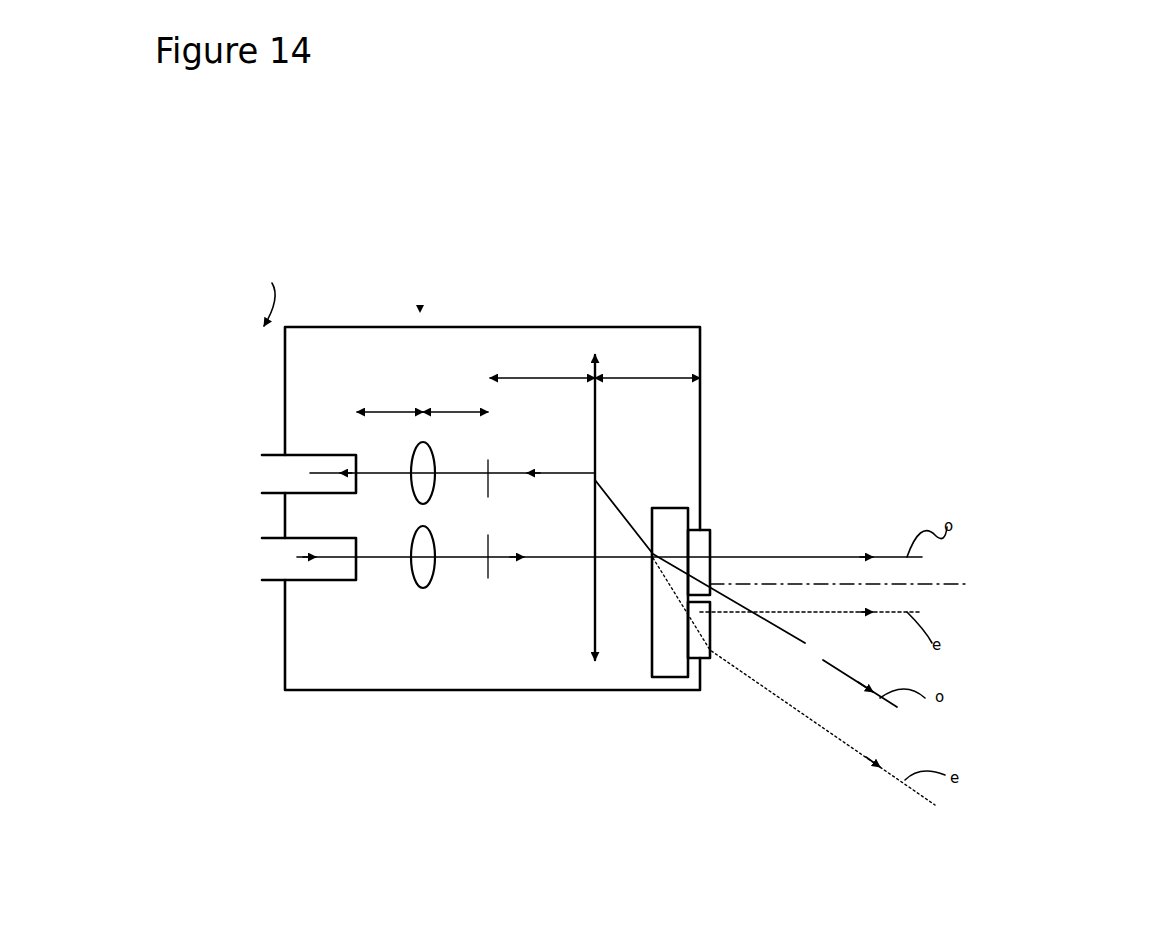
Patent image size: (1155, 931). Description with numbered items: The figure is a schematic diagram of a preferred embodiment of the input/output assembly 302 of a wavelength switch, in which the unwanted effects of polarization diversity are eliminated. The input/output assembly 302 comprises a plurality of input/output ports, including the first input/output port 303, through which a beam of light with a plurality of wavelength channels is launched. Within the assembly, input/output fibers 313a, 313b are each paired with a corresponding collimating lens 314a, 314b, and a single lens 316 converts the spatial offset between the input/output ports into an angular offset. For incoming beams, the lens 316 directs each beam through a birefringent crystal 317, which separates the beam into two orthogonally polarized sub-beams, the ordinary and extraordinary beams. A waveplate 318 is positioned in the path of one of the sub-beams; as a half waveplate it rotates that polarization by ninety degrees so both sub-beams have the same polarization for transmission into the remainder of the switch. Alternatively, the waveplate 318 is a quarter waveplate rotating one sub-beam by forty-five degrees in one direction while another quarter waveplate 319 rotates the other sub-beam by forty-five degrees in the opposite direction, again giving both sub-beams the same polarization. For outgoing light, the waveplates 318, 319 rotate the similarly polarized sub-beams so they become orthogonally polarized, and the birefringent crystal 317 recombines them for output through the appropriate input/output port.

The input/output assembly 302 is at (836, 323).
The first input/output port 303 is at (336, 285).
The input/output fiber 313a is at (272, 453).
The input/output fiber 313b is at (273, 581).
The collimating lens 314a is at (437, 452).
The collimating lens 314b is at (417, 592).
The single lens 316 is at (598, 413).
The birefringent crystal 317 is at (668, 502).
The waveplate 318 is at (712, 531).
The quarter waveplate 319 is at (708, 656).